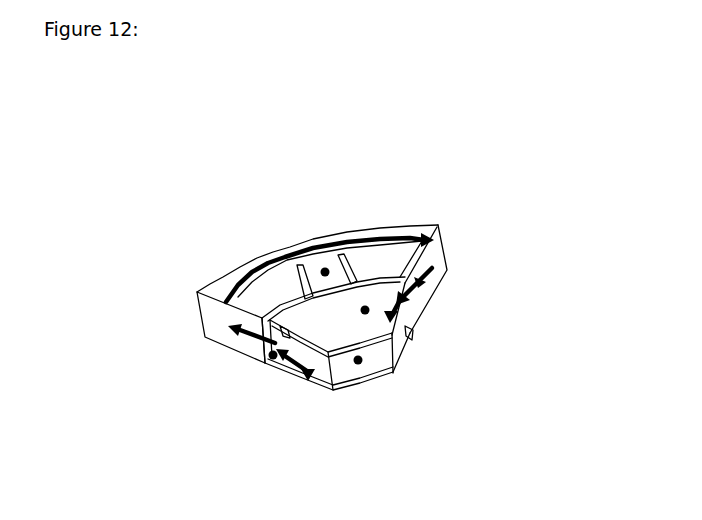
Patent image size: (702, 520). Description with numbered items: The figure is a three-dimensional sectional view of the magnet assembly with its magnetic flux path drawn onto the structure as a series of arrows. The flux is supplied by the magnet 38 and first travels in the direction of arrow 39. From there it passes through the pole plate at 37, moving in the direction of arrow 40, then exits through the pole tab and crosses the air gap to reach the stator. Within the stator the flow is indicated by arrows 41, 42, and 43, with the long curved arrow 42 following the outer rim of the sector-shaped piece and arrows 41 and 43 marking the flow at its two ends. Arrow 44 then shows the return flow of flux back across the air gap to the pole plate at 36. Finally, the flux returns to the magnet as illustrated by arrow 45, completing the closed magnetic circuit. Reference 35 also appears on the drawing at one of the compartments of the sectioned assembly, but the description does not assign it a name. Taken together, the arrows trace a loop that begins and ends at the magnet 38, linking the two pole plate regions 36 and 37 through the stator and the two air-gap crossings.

The first compartment 35 is at (327, 270).
The pole plate 36 is at (369, 308).
The pole plate 37 is at (262, 363).
The magnet 38 is at (362, 360).
The arrow 39 is at (327, 393).
The arrow 40 is at (274, 360).
The arrow 41 is at (225, 329).
The arrow 42 is at (290, 250).
The arrow 43 is at (401, 305).
The arrow 44 is at (405, 302).
The arrow 45 is at (412, 333).